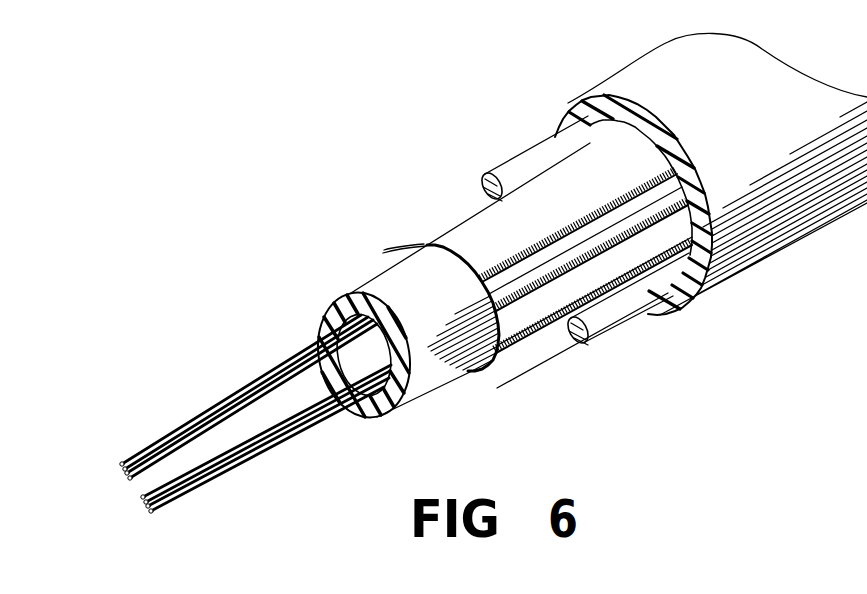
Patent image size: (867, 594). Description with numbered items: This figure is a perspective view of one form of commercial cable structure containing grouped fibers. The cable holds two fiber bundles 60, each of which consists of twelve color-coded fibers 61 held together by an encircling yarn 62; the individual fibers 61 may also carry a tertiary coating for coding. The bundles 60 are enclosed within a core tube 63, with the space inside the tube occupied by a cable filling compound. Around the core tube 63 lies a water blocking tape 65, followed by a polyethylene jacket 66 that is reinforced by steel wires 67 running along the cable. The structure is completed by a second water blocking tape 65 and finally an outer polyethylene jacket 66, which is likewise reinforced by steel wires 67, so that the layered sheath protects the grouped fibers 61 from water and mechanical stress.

The fiber bundle 60 is at (132, 495).
The color-coded fiber 61 is at (140, 508).
The encircling yarn 62 is at (196, 470).
The core tube 63 is at (332, 320).
The water blocking tape 65 is at (465, 221).
The polyethylene jacket 66 is at (573, 112).
The steel wire 67 is at (503, 168).